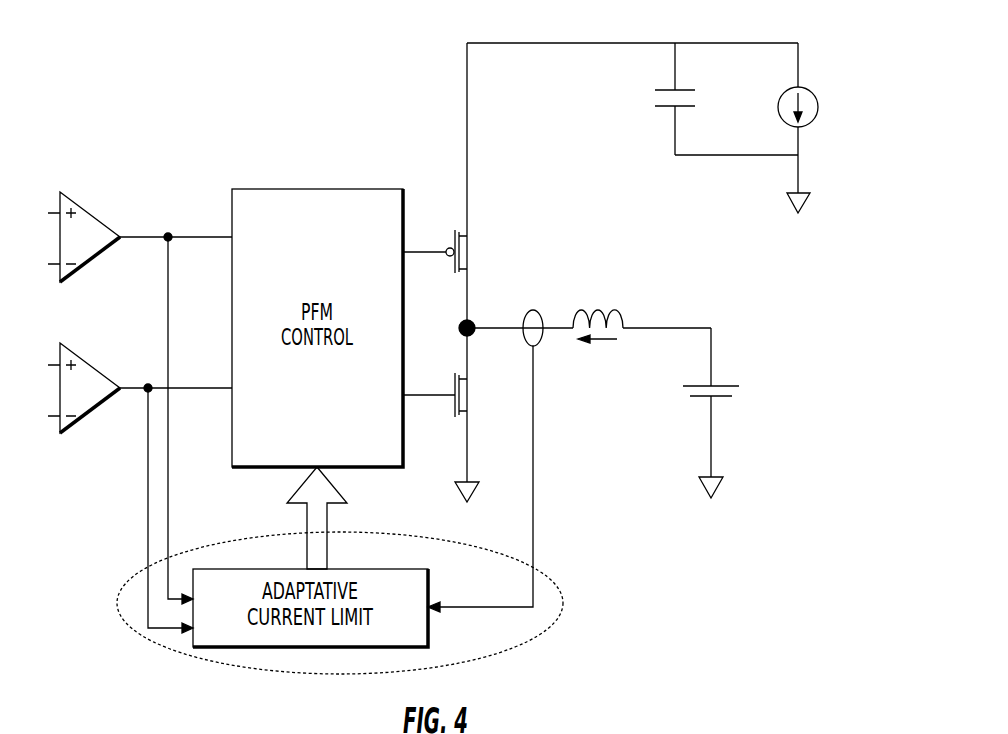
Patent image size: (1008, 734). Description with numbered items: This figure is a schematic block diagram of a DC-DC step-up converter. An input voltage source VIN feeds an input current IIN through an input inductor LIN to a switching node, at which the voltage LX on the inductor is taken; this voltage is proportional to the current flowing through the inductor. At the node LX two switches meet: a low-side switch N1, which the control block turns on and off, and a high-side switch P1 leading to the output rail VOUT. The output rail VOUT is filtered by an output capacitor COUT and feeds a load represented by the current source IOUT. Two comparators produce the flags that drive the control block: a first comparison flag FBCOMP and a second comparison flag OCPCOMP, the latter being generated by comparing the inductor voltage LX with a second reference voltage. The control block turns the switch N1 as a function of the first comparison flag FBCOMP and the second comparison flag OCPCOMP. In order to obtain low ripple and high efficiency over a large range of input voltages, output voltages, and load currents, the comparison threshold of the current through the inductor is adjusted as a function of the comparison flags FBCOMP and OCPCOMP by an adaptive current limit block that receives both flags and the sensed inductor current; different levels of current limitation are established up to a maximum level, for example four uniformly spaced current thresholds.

The PMOS high-side switch P1 is at (451, 185).
The switch N1 is at (451, 415).
The voltage on the inductor LX is at (498, 327).
The output voltage rail VOUT is at (632, 23).
The output capacitor COUT is at (726, 99).
The output load current source IOUT is at (825, 128).
The input inductor LIN is at (642, 301).
The input current IIN is at (597, 357).
The input voltage source VIN is at (729, 413).
The first comparison flag FBCOMP is at (140, 398).
The second comparison flag OCPCOMP is at (140, 488).